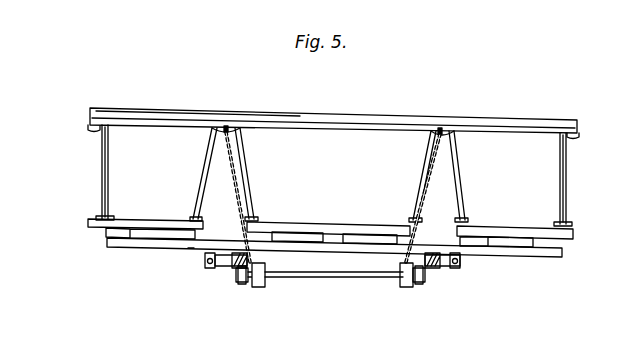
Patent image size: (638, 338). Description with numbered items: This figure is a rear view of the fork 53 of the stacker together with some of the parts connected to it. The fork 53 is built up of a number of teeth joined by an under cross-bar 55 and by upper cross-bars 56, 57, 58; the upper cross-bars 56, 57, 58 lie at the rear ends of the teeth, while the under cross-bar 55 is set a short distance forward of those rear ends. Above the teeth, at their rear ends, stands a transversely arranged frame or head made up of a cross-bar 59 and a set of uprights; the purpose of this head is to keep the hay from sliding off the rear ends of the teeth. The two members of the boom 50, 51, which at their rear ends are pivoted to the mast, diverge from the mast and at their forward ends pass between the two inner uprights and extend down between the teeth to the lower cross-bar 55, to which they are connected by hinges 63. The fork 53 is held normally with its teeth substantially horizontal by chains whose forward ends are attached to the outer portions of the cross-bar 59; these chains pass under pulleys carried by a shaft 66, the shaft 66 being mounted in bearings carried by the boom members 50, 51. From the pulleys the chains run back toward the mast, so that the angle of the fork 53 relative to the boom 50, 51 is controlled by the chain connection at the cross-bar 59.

The boom member 50 is at (231, 268).
The boom member 51 is at (440, 268).
The fork 53 is at (207, 264).
The under cross-bar 55 is at (124, 246).
The upper cross-bar 56 is at (143, 230).
The upper cross-bar 57 is at (292, 229).
The upper cross-bar 58 is at (537, 233).
The cross-bar 59 is at (352, 128).
The hinges 63 is at (461, 265).
The shaft 66 is at (366, 278).